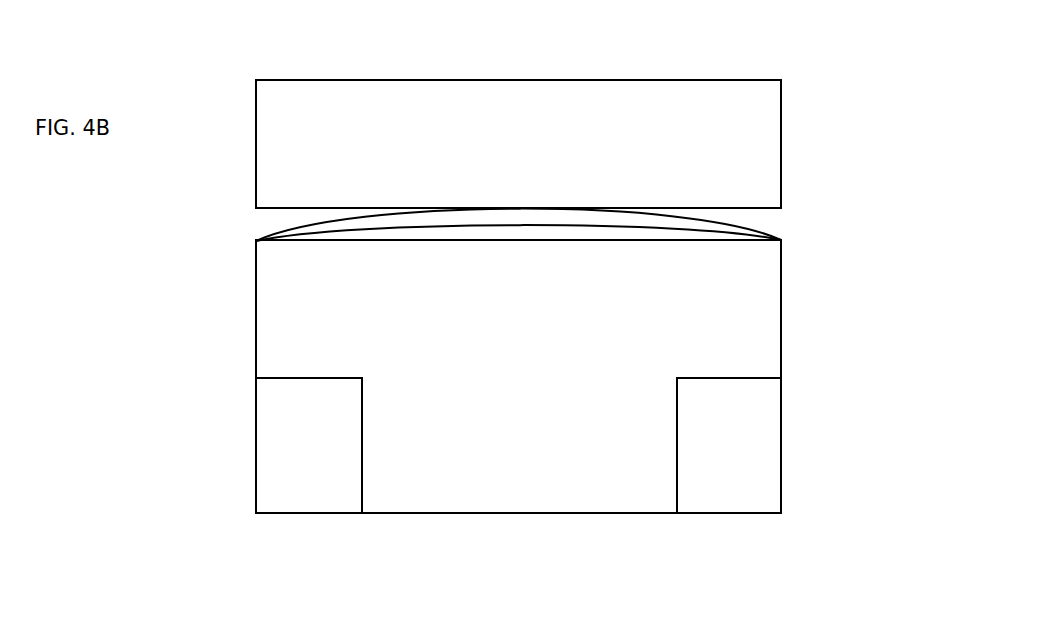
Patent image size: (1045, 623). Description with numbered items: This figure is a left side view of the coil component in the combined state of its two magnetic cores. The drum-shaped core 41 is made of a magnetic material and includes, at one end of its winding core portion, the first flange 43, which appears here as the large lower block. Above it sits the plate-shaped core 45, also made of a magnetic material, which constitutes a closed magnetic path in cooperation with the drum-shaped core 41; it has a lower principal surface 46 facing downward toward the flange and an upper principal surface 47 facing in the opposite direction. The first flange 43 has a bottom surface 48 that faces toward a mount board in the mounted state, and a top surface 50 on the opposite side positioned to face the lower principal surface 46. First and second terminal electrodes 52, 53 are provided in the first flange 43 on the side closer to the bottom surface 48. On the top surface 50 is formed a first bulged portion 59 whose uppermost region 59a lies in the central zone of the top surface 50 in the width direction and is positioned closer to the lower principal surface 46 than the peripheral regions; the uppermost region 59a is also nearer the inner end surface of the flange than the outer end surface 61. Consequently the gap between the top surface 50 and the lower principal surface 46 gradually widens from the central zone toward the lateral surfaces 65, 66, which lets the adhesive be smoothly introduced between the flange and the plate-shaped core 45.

The drum-shaped core 41 is at (236, 330).
The first flange 43 is at (256, 363).
The plate-shaped core 45 is at (255, 128).
The lower principal surface 46 is at (743, 209).
The upper principal surface 47 is at (553, 80).
The bottom surface 48 is at (522, 513).
The top surface 50 is at (713, 224).
The first terminal electrode 52 is at (300, 513).
The second terminal electrode 53 is at (720, 493).
The first bulged portion 59 is at (405, 222).
The uppermost region 59a is at (492, 207).
The outer end surface 61 is at (705, 342).
The lateral surface 65 is at (256, 291).
The lateral surface 66 is at (781, 297).